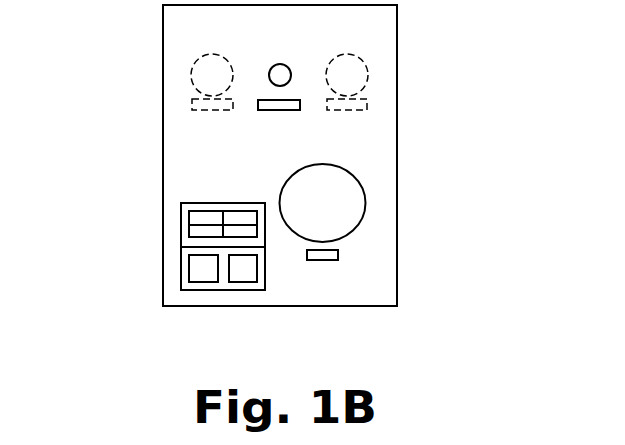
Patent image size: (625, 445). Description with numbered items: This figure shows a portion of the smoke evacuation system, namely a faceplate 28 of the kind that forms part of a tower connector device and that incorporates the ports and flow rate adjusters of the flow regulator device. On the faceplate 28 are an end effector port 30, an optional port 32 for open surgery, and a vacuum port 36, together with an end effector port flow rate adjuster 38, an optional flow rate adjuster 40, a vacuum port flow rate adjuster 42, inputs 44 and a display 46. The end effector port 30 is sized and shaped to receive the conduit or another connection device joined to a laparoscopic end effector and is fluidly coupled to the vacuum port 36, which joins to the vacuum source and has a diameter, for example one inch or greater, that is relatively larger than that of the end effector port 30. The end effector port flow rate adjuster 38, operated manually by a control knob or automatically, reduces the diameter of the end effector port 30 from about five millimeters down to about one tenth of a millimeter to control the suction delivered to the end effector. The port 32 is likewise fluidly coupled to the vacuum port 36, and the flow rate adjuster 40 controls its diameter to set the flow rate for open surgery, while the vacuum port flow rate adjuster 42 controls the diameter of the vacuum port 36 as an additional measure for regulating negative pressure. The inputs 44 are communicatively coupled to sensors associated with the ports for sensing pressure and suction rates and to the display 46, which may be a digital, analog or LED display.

The faceplate 28 is at (163, 26).
The end effector port 30 is at (287, 66).
The port 32 is at (367, 72).
The vacuum port 36 is at (365, 203).
The end effector port flow rate adjuster 38 is at (290, 110).
The flow rate adjuster 40 is at (367, 101).
The vacuum port flow rate adjuster 42 is at (338, 253).
The inputs 44 is at (230, 282).
The display 46 is at (183, 212).